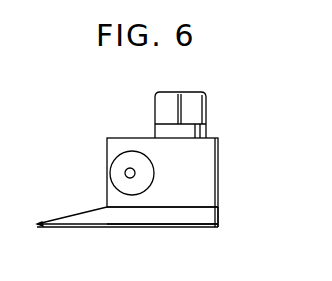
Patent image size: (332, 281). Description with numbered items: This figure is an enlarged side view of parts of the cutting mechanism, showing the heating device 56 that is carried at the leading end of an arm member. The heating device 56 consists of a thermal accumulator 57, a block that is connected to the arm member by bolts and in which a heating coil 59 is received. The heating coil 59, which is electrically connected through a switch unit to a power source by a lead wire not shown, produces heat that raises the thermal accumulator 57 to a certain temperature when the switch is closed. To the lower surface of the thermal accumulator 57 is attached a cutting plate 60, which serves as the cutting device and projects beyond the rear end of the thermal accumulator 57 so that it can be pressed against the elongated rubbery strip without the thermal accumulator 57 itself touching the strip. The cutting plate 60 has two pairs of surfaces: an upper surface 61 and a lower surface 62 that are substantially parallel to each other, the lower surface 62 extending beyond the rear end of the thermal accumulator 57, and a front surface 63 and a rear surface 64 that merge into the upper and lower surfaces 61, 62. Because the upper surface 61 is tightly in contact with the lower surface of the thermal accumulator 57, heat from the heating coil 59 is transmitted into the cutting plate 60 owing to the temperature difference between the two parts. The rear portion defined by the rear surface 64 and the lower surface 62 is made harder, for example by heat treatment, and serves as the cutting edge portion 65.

The heating device 56 is at (213, 109).
The thermal accumulator 57 is at (218, 141).
The heating coil 59 is at (125, 173).
The cutting plate 60 is at (190, 229).
The upper surface 61 is at (188, 207).
The lower surface 62 is at (134, 228).
The front surface 63 is at (220, 215).
The rear surface 64 is at (78, 216).
The cutting edge portion 65 is at (58, 228).